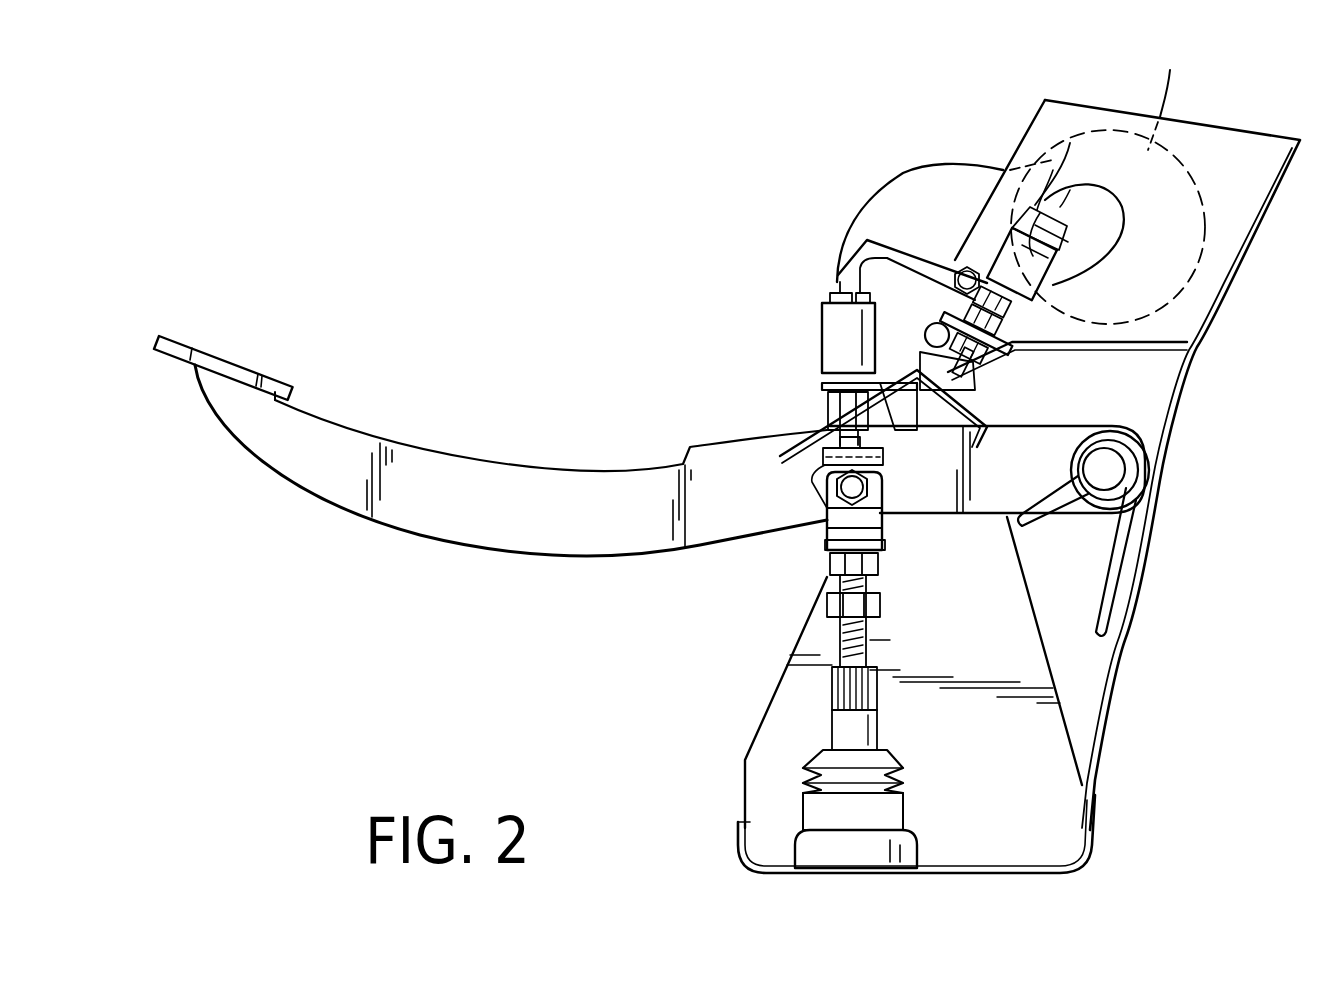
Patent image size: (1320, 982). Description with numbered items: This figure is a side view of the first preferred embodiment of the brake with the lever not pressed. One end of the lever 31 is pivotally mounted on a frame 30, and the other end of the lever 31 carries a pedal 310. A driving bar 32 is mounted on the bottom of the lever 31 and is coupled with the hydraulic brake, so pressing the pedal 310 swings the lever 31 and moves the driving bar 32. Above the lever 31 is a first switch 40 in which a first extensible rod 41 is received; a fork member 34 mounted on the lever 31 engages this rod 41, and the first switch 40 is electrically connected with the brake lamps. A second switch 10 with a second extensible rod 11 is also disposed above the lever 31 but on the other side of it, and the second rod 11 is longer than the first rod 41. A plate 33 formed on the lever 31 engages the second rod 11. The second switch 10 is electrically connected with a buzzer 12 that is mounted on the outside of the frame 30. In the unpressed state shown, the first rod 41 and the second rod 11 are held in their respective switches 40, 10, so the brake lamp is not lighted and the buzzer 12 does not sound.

The second switch 10 is at (840, 328).
The second extensible rod 11 is at (884, 446).
The buzzer 12 is at (1190, 197).
The frame 30 is at (978, 125).
The lever 31 is at (470, 528).
The pedal 310 is at (236, 362).
The driving bar 32 is at (840, 636).
The plate 33 is at (823, 463).
The fork member 34 is at (988, 395).
The first switch 40 is at (1007, 257).
The first extensible rod 41 is at (973, 363).